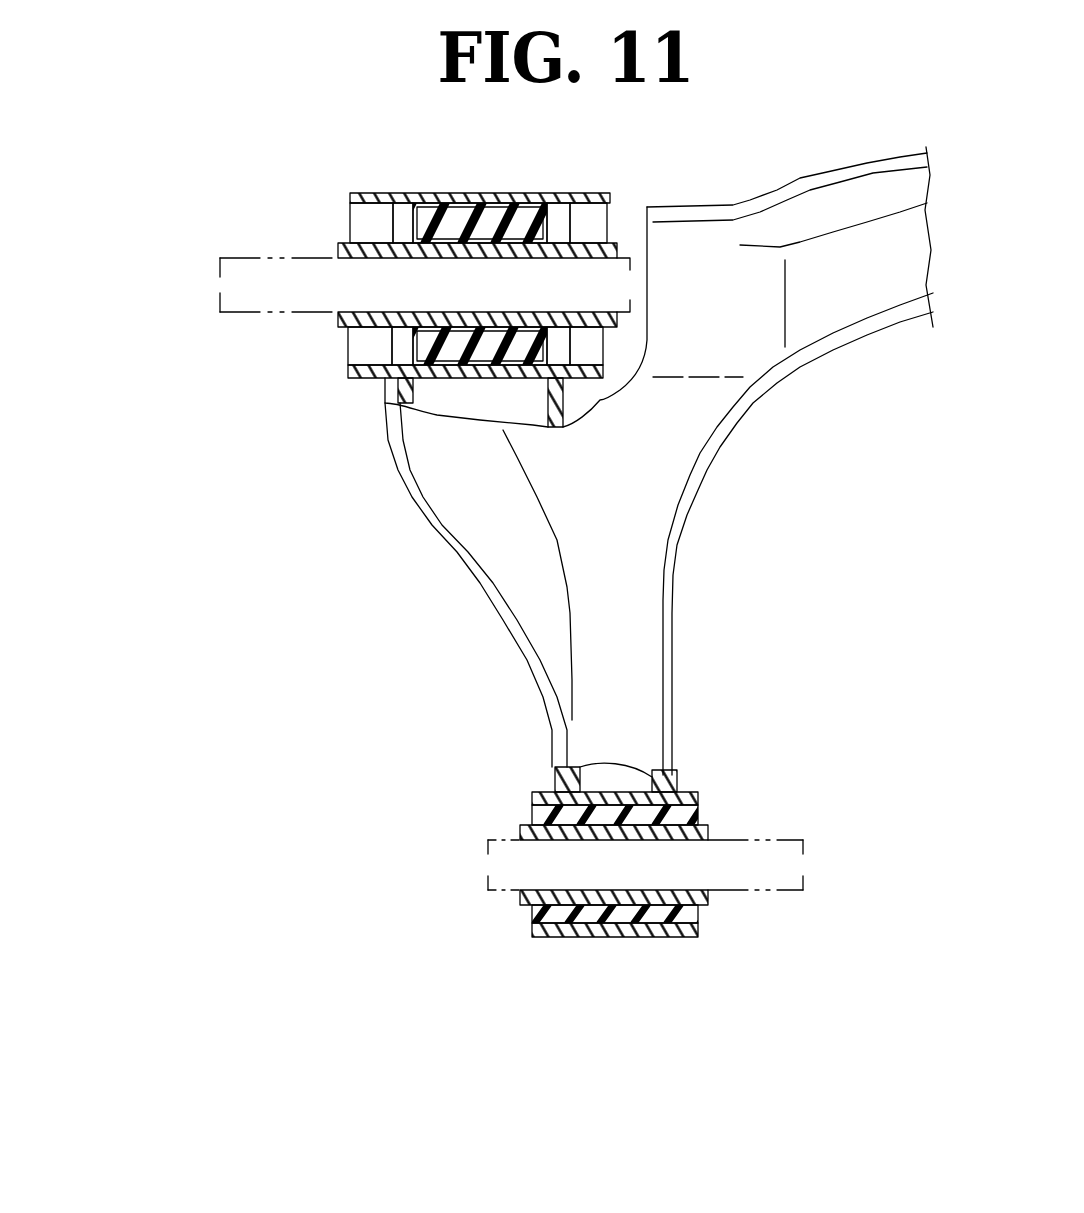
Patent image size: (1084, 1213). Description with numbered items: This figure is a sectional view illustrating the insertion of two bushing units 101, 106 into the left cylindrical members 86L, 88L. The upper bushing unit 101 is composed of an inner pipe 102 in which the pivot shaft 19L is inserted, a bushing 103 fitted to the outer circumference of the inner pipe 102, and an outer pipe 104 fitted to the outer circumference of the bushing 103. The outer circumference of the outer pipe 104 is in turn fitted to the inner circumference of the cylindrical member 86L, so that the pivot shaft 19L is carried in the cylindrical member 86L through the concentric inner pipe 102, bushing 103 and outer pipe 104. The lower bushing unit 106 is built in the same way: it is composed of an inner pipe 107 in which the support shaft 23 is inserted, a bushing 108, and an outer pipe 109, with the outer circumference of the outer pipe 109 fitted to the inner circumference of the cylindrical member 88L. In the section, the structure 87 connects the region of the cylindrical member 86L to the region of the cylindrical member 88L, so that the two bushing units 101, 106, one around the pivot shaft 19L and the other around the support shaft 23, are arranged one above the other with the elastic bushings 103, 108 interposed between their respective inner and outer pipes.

The bushing unit 101 is at (334, 338).
The pivot shaft 19L is at (250, 313).
The inner pipe 102 is at (343, 315).
The bushing 103 is at (413, 337).
The cylindrical member 86L is at (357, 367).
The outer pipe 104 is at (433, 380).
The body frame 87 is at (740, 418).
The bushing unit 106 is at (499, 930).
The inner pipe 107 is at (529, 899).
The bushing 108 is at (532, 910).
The outer pipe 109 is at (525, 930).
The cylindrical member 88L is at (560, 940).
The support shaft 23 is at (783, 892).